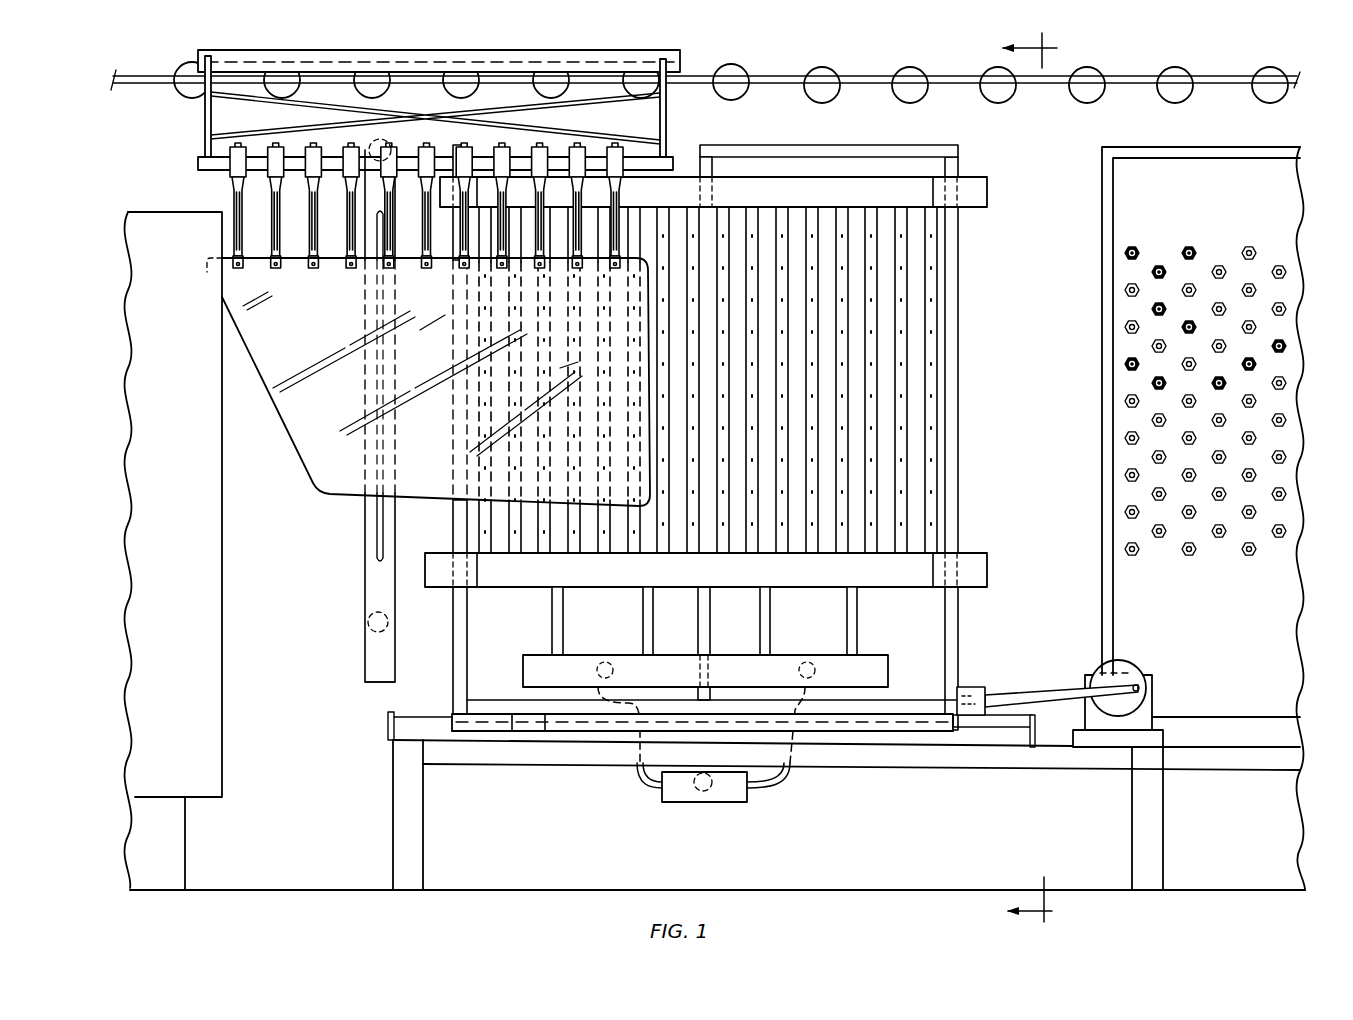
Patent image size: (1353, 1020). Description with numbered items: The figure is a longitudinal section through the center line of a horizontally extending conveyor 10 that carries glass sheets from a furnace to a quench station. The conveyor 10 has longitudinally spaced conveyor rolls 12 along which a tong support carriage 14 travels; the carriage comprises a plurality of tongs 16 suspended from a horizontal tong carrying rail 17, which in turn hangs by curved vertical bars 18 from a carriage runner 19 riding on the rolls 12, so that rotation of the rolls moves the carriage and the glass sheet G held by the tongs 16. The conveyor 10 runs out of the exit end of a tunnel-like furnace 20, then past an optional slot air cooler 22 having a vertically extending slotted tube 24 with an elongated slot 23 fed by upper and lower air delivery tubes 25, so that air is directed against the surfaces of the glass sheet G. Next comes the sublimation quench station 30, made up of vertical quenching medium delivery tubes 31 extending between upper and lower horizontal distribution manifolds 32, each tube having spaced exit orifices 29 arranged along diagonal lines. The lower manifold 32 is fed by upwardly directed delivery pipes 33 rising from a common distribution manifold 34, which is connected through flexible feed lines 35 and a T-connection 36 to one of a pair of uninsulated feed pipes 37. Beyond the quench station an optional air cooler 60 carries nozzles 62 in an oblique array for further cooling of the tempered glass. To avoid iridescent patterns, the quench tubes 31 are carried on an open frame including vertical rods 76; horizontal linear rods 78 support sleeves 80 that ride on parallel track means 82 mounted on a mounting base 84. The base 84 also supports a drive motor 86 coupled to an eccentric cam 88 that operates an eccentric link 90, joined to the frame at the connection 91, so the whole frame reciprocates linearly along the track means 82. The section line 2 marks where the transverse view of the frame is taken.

The conveyor 10 is at (1203, 90).
The conveyor rolls 12 is at (185, 70).
The tong support carriage 14 is at (158, 110).
The tongs 16 is at (232, 197).
The tong carrying rail 17 is at (198, 161).
The curved vertical bars 18 is at (205, 107).
The carriage runner 19 is at (684, 64).
The tunnel-like furnace 20 is at (229, 729).
The slot air cooler 22 is at (350, 685).
The elongated slots 23 is at (376, 516).
The slotted tube 24 is at (370, 581).
The air delivery tubes 25 is at (370, 142).
The exit orifices 29 is at (931, 426).
The sublimation quench station 30 is at (966, 311).
The quenching medium delivery tubes 31 is at (937, 259).
The distribution manifolds 32 is at (988, 193).
The delivery pipes 33 is at (643, 607).
The common distribution manifold 34 is at (745, 655).
The flexible feed lines 35 is at (648, 782).
The T-connection 36 is at (672, 808).
The uninsulated feed pipes 37 is at (712, 790).
The air cooler 60 is at (1270, 189).
The nozzles 62 is at (1160, 270).
The vertical rods 76 is at (468, 612).
The horizontal linear rods 78 is at (522, 700).
The sleeves 80 is at (536, 733).
The track means 82 is at (437, 713).
The mounting base 84 is at (1080, 771).
The drive motor 86 is at (1155, 696).
The eccentric cam 88 is at (1135, 668).
The eccentric link 90 is at (1083, 668).
The rod coupling 91 is at (990, 688).
The section line 2- 2 is at (1038, 479).
The glass sheet G is at (288, 425).